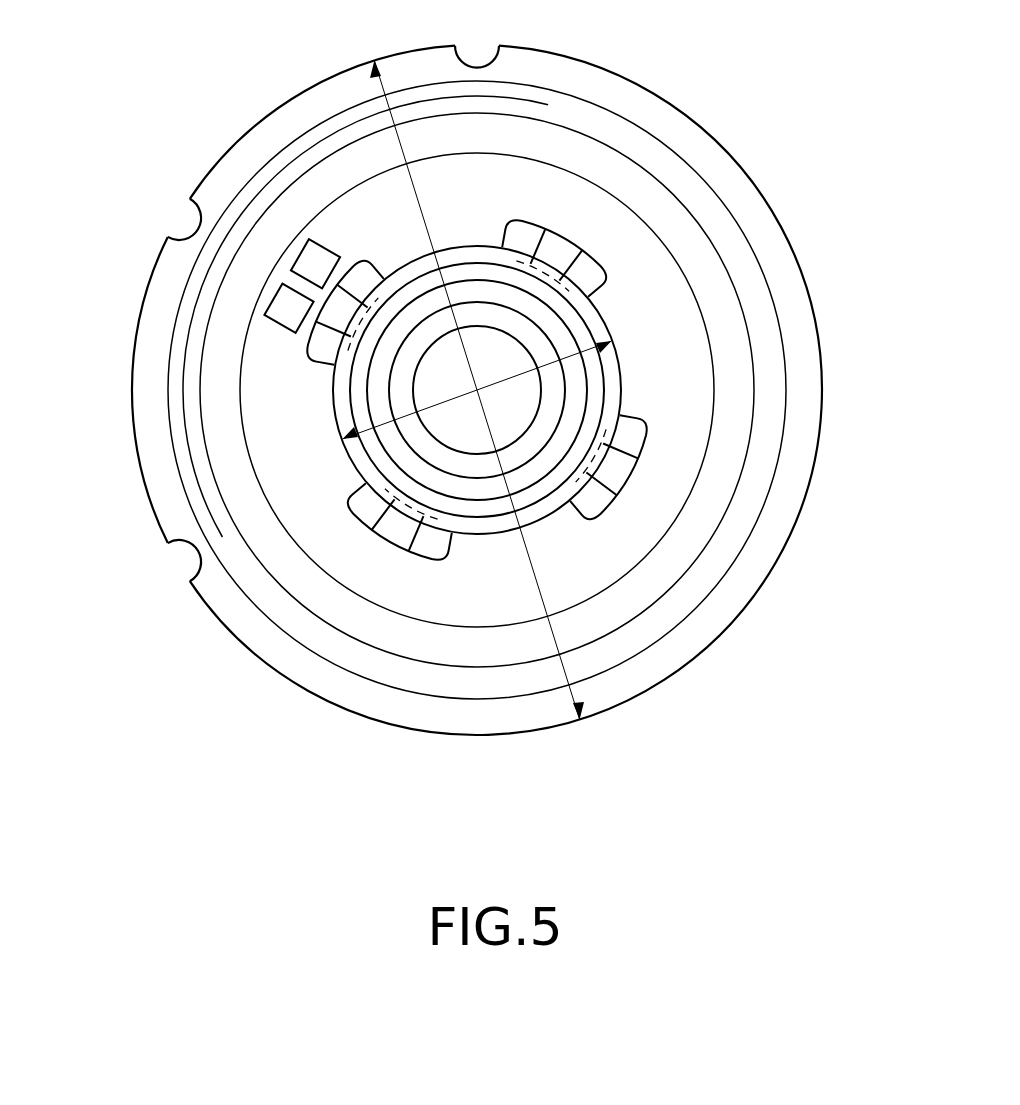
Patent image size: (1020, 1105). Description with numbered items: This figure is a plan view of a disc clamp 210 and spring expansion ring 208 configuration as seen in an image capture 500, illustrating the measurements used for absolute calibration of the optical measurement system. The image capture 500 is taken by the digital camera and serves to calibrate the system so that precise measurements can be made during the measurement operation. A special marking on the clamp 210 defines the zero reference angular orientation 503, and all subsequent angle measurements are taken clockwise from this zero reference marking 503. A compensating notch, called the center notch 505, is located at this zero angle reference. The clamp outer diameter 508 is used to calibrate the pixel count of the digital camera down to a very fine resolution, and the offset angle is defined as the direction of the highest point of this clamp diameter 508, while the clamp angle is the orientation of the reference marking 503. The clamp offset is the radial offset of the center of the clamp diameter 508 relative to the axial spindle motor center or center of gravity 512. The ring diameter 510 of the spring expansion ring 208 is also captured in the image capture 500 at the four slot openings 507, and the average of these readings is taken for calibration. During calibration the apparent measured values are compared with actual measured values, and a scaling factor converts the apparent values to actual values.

The image capture 500 is at (172, 709).
The zero reference marking 503 is at (277, 323).
The center notch 505 is at (193, 227).
The slot openings 507 is at (538, 236).
The clamp outer diameter 508 is at (420, 204).
The ring diameter 510 is at (568, 358).
The axial spindle motor center 512 is at (477, 390).
The spring expansion ring 208 is at (620, 358).
The disc clamp 210 is at (773, 523).